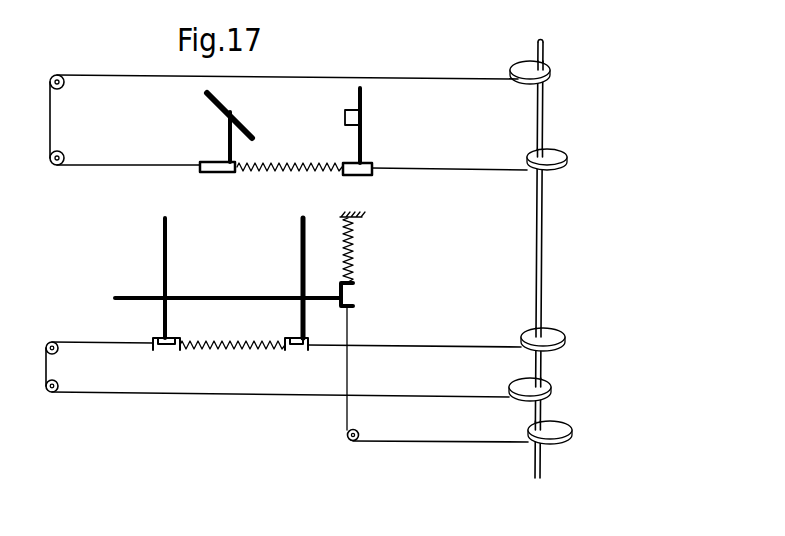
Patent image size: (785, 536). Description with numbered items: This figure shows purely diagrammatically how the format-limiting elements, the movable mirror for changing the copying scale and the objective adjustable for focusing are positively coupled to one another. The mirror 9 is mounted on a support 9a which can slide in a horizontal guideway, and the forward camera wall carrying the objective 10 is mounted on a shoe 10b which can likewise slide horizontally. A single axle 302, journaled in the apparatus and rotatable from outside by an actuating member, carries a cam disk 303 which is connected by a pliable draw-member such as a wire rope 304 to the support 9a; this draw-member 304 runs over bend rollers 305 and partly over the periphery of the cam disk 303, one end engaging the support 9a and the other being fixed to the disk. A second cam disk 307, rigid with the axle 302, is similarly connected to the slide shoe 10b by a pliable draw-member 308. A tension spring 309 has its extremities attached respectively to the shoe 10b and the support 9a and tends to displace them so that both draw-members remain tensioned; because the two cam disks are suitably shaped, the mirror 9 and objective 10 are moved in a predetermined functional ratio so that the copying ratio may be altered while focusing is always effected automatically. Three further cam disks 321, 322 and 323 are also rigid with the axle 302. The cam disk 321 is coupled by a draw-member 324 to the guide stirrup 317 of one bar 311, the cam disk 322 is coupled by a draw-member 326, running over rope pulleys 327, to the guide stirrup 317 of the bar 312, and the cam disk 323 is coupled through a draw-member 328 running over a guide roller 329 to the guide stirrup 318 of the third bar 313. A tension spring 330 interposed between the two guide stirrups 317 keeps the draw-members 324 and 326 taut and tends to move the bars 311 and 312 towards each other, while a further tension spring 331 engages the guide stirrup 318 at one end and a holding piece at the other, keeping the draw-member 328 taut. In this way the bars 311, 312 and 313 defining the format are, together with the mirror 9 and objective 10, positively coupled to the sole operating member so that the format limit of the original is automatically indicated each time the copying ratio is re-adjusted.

The mirror 9 is at (241, 118).
The support 9a is at (206, 161).
The objective 10 is at (345, 117).
The shoe 10b is at (366, 164).
The axle 302 is at (544, 243).
The cam disk 303 is at (524, 61).
The wire rope 304 is at (92, 74).
The bend rollers 305 is at (60, 89).
The second cam disk 307 is at (551, 150).
The draw-member 308 is at (462, 170).
The tension spring 309 is at (272, 176).
The bar 311 is at (301, 233).
The bar 312 is at (163, 246).
The third bar 313 is at (225, 296).
The guide stirrup 317 is at (154, 338).
The guide stirrup 318 is at (355, 298).
The cam disk 321 is at (548, 326).
The cam disk 322 is at (508, 384).
The cam disk 323 is at (559, 422).
The draw-member 324 is at (437, 345).
The draw-member 326 is at (151, 396).
The rope pulley 327 is at (58, 360).
The draw-member 328 is at (472, 444).
The guide roller 329 is at (359, 431).
The tension spring 330 is at (215, 350).
The tension spring 331 is at (355, 249).